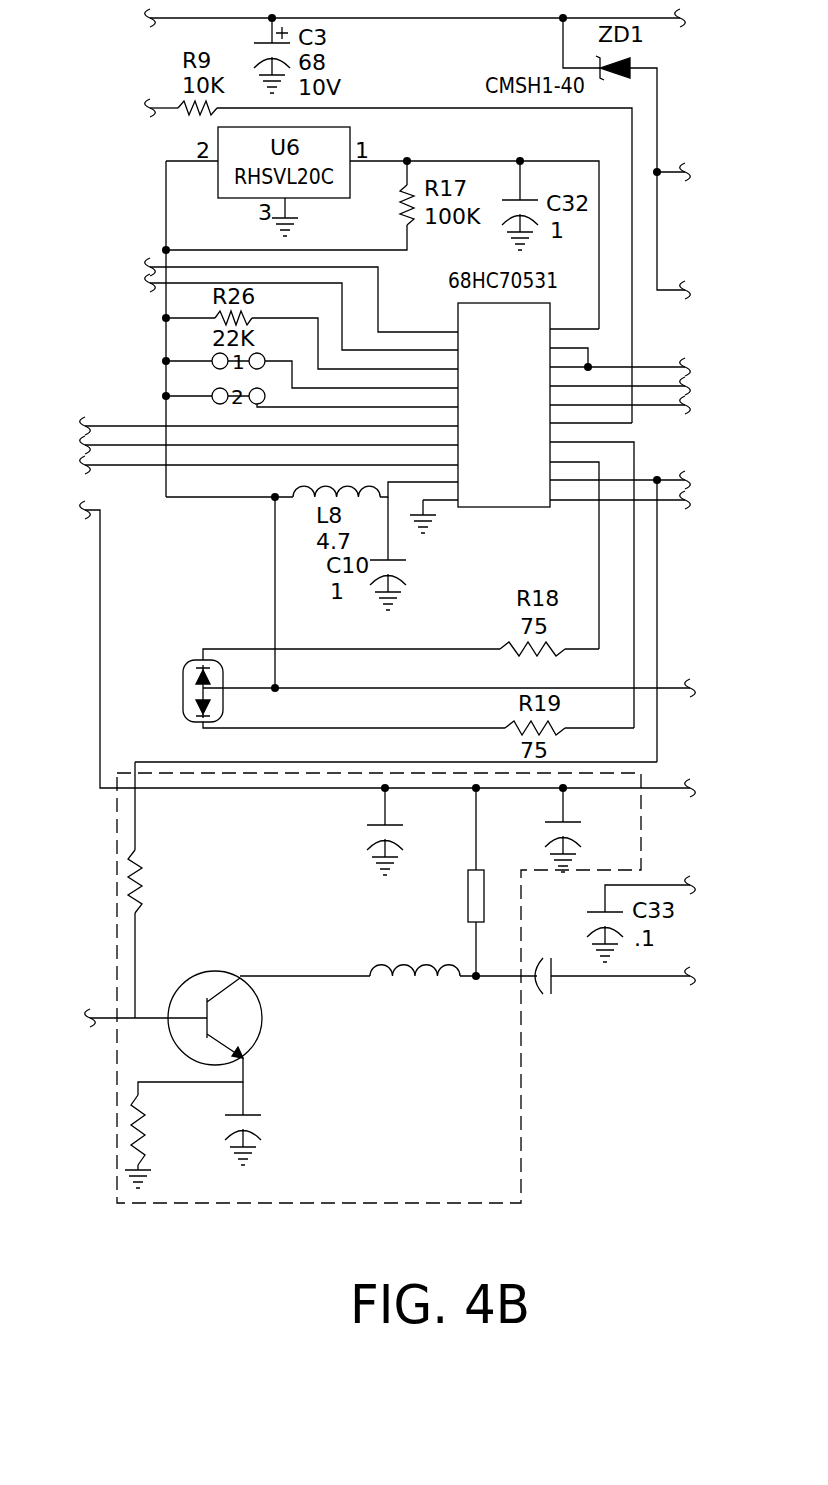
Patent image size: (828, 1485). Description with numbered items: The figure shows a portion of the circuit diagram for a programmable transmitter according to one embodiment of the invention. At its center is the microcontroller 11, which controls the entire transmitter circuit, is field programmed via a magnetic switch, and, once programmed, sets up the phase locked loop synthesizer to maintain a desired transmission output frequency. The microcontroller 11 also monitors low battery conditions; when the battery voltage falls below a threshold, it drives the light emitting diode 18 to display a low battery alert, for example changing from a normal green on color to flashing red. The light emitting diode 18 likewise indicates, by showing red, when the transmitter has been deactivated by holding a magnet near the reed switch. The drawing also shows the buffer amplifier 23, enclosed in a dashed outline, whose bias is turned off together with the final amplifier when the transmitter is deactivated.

The microcontroller 11 is at (502, 495).
The light emitting diode (LED) 18 is at (160, 682).
The buffer amplifier 23 is at (370, 1192).